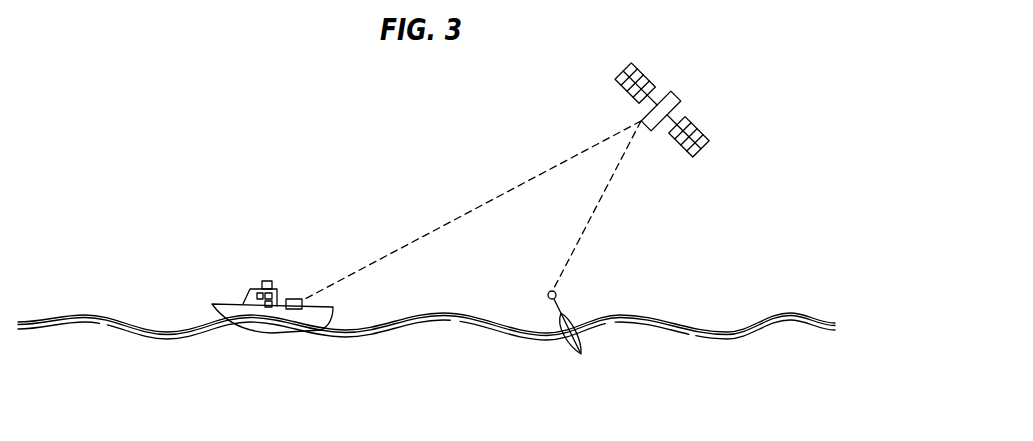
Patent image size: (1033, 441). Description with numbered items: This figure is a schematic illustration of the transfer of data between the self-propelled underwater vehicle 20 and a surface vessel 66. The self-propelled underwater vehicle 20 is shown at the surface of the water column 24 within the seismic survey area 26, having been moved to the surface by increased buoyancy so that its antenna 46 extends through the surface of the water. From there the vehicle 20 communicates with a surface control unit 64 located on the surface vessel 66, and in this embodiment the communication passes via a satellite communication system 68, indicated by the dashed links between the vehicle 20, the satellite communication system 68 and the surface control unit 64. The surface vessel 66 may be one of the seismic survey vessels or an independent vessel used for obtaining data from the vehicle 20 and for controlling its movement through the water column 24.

The satellite communication system 68 is at (660, 78).
The surface vessel 66 is at (268, 280).
The surface control unit 64 is at (290, 299).
The antenna 46 is at (556, 309).
The self-propelled underwater vehicle 20 is at (578, 307).
The seismic survey area 26 is at (746, 293).
The water column 24 is at (650, 393).